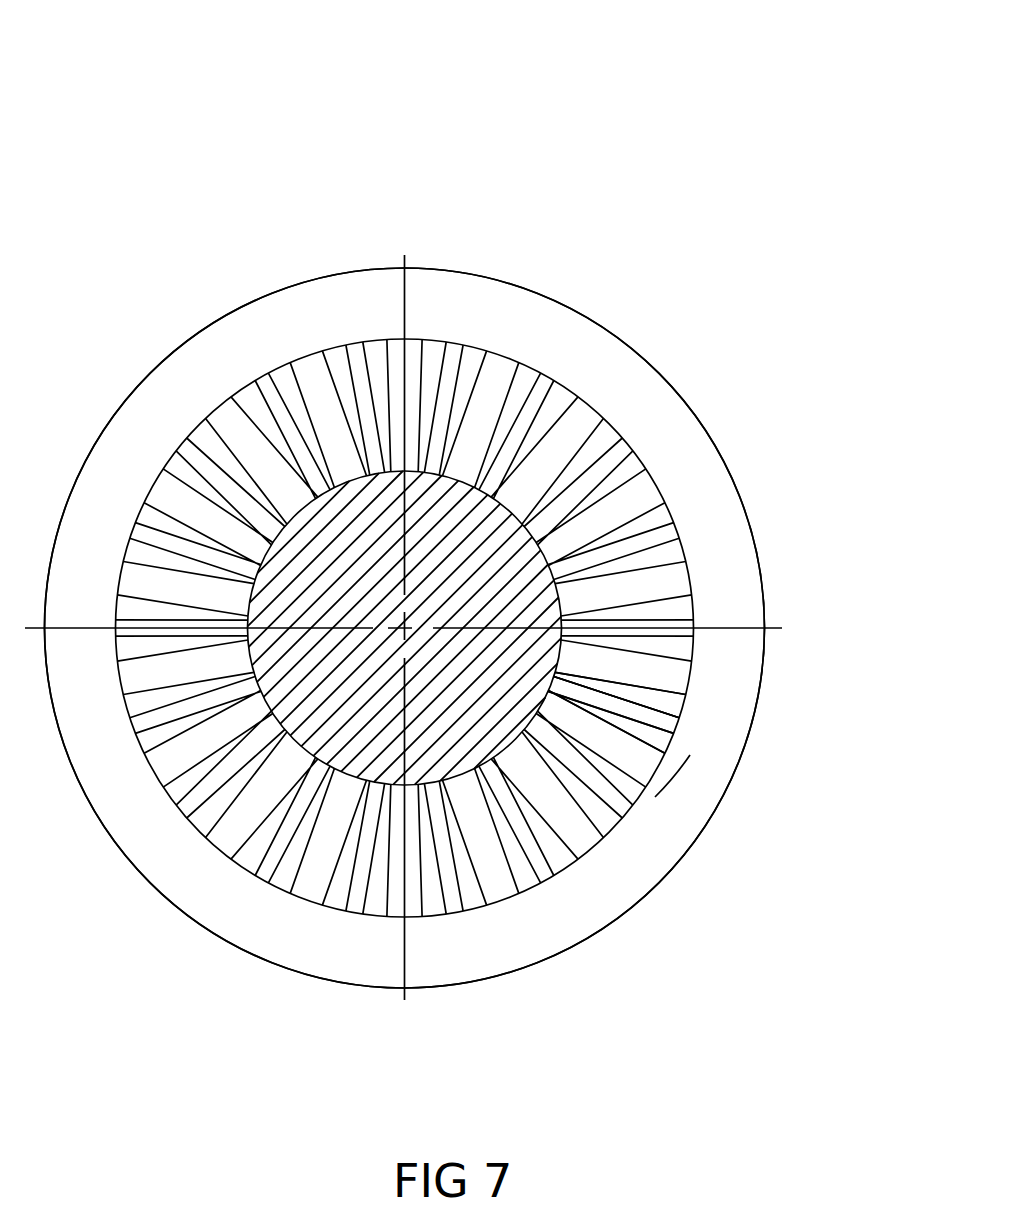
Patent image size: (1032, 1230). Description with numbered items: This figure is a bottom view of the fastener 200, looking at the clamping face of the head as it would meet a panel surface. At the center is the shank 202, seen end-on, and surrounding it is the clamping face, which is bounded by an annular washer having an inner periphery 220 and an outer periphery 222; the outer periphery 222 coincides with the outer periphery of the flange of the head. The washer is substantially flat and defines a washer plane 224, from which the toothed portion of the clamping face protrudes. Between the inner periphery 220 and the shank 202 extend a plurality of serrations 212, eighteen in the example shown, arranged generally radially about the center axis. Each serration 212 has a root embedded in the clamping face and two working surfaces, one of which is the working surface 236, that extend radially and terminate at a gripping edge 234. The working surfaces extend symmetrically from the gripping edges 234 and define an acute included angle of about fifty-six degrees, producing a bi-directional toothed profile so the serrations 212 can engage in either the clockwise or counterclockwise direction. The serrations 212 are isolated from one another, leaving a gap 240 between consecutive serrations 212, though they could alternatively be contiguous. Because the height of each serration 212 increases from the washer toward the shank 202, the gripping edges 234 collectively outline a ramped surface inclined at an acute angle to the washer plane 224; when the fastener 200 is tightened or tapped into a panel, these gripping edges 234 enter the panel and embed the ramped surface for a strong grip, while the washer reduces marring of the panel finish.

The fastener 200 is at (716, 182).
The shank 202 is at (525, 587).
The serrations 212 is at (666, 746).
The inner periphery 220 is at (587, 853).
The outer periphery 222 is at (662, 882).
The washer plane 224 is at (542, 947).
The gripping edge 234 is at (667, 722).
The working surface 236 is at (662, 702).
The gap 240 is at (573, 422).